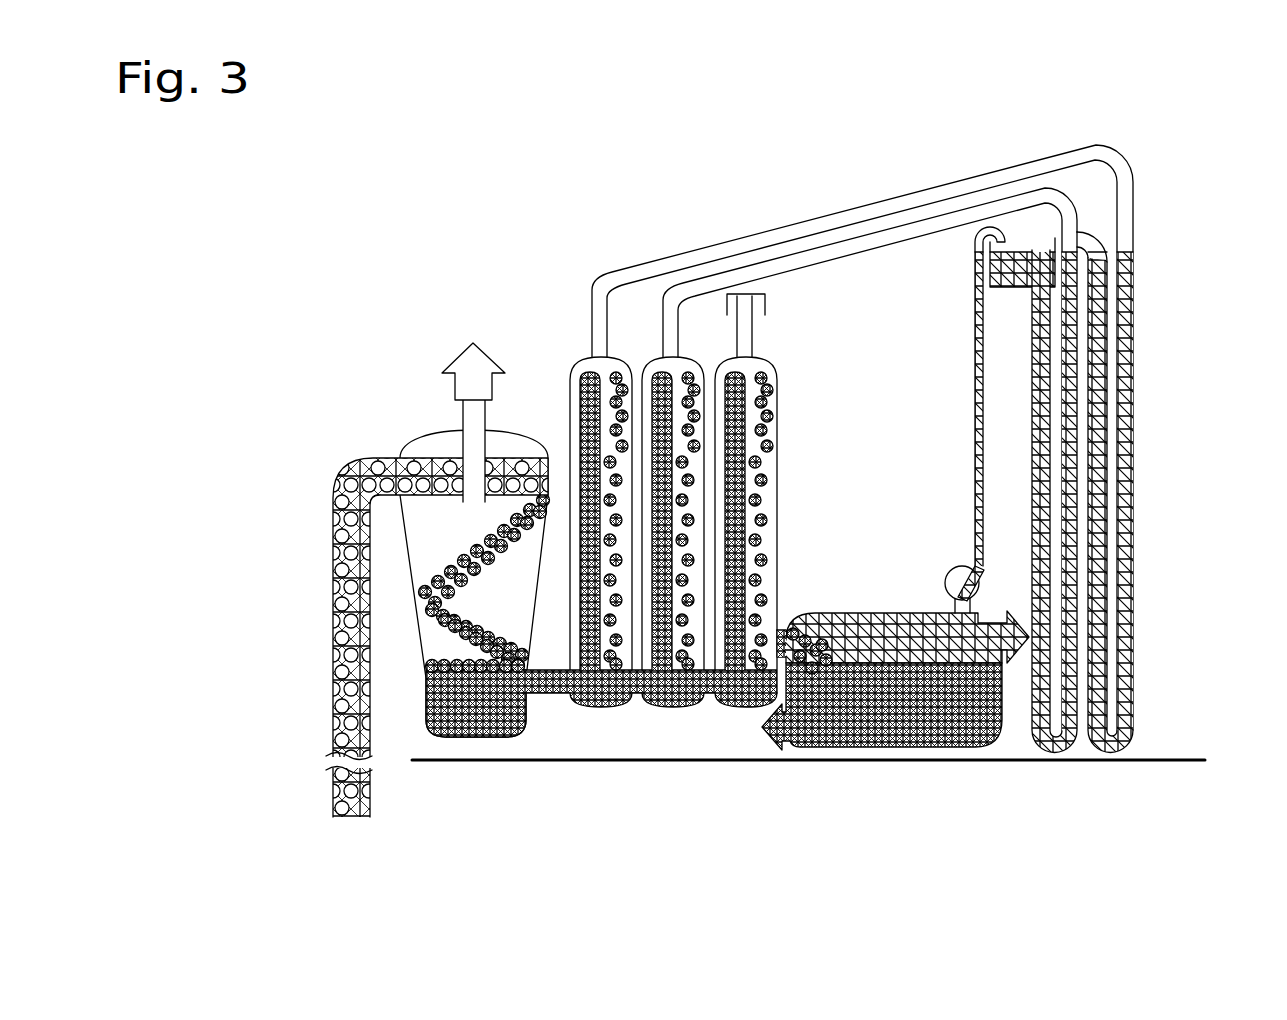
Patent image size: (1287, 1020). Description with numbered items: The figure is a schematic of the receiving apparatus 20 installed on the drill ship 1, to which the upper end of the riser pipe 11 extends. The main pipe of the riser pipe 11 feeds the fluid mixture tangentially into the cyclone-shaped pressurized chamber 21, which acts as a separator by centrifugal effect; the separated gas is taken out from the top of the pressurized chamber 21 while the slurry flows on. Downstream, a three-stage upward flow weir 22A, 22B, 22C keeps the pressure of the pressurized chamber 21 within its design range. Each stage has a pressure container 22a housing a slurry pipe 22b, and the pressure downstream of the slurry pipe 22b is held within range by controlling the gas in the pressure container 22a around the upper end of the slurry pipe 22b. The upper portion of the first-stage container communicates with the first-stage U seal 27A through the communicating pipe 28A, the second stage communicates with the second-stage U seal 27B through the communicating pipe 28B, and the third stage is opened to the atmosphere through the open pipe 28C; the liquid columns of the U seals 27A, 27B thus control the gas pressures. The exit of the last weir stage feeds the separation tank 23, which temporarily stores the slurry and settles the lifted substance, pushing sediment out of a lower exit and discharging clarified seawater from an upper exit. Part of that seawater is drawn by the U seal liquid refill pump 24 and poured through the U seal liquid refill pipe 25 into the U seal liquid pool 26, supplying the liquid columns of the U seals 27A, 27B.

The drill ship 1 is at (1173, 760).
The riser pipe 11 is at (333, 590).
The receiving apparatus 20 is at (478, 228).
The pressurized chamber 21 is at (405, 440).
The pressure container 22a is at (578, 358).
The slurry pipe 22b is at (572, 445).
The upward flow weir (first stage) 22A is at (577, 566).
The upward flow weir (second stage) 22B is at (675, 708).
The upward flow weir (third stage) 22C is at (745, 708).
The separation tank 23 is at (880, 748).
The U seal liquid refill pump 24 is at (948, 575).
The U seal liquid refill pipe 25 is at (973, 405).
The U seal liquid pool 26 is at (990, 273).
The U seal (first stage) 27A is at (1110, 753).
The U seal (second stage) 27B is at (1053, 753).
The communicating pipe 28A is at (805, 220).
The communicating pipe 28B is at (928, 215).
The open pipe 28C is at (755, 333).